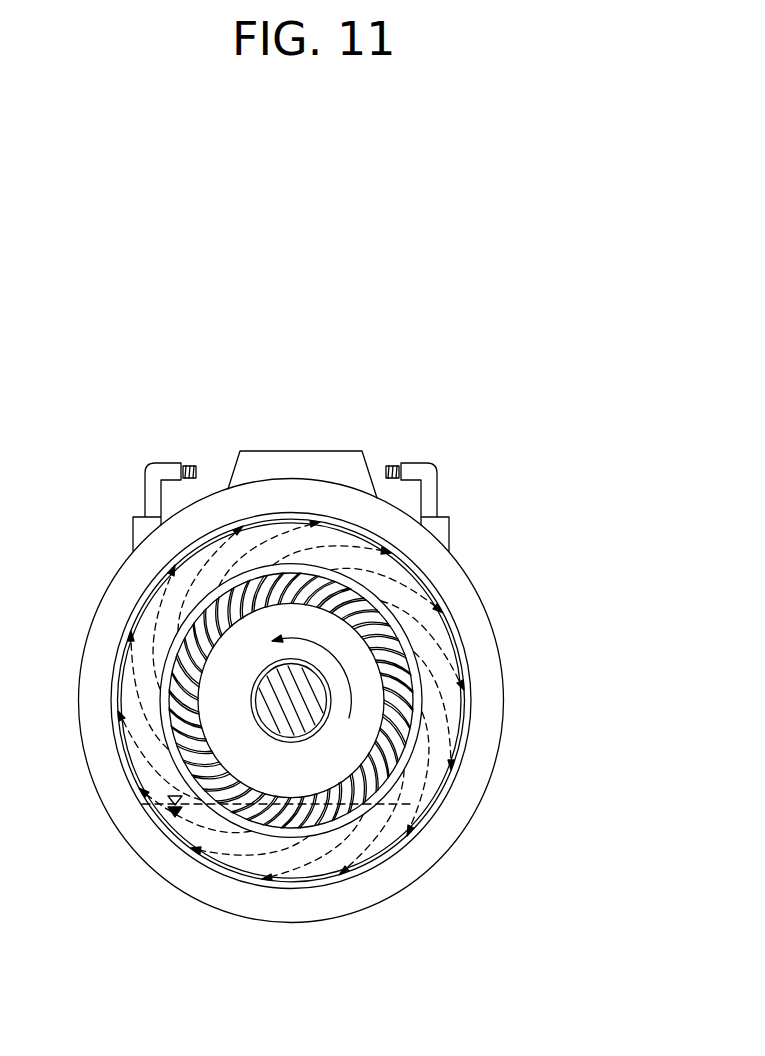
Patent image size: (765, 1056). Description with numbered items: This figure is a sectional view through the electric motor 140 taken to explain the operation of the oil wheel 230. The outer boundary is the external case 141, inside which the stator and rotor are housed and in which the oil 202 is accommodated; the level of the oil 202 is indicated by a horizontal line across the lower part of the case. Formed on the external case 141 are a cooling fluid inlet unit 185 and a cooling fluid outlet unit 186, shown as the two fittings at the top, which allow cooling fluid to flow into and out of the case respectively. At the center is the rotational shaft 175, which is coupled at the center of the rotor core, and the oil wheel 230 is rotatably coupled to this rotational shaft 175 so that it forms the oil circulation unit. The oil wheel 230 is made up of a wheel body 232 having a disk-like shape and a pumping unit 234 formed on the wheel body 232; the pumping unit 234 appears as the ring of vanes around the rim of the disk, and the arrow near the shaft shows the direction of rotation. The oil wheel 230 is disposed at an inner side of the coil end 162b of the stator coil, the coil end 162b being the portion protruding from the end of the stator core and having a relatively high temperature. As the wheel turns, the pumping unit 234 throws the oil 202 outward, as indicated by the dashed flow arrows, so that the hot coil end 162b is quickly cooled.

The electric motor 140 is at (103, 398).
The external case 141 is at (477, 592).
The coil end 162b is at (443, 652).
The rotational shaft 175 is at (268, 694).
The cooling fluid inlet unit 185 is at (413, 468).
The cooling fluid outlet unit 186 is at (170, 468).
The oil 202 is at (410, 804).
The oil wheel 230 is at (401, 701).
The wheel body 232 is at (362, 707).
The pumping unit 234 is at (404, 674).